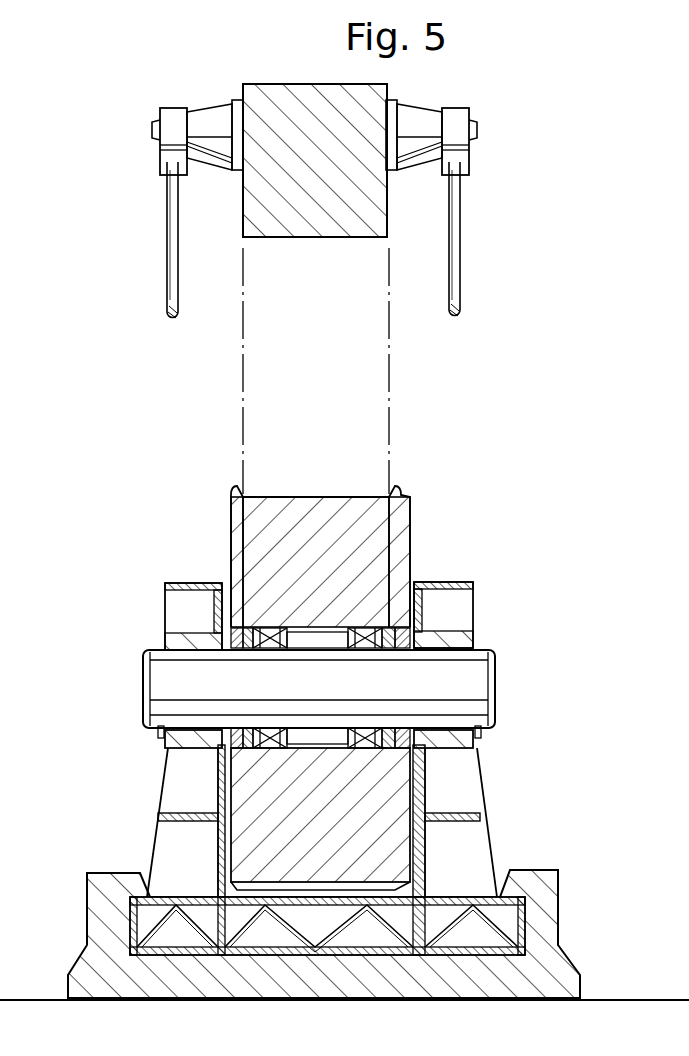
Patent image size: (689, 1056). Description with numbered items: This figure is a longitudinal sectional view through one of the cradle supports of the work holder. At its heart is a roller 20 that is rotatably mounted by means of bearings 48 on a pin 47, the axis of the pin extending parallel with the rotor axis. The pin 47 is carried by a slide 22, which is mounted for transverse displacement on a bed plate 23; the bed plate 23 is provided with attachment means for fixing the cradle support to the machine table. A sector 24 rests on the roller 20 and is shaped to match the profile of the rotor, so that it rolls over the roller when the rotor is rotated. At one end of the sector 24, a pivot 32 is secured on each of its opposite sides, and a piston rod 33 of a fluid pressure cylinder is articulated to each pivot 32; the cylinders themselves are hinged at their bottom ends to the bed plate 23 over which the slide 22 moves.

The roller 20 is at (246, 538).
The slide 22 is at (146, 811).
The bed plate 23 is at (322, 990).
The sector 24 is at (272, 188).
The pivot 32 is at (207, 122).
The piston rod 33 is at (173, 277).
The pin 47 is at (170, 692).
The bearings 48 is at (356, 650).